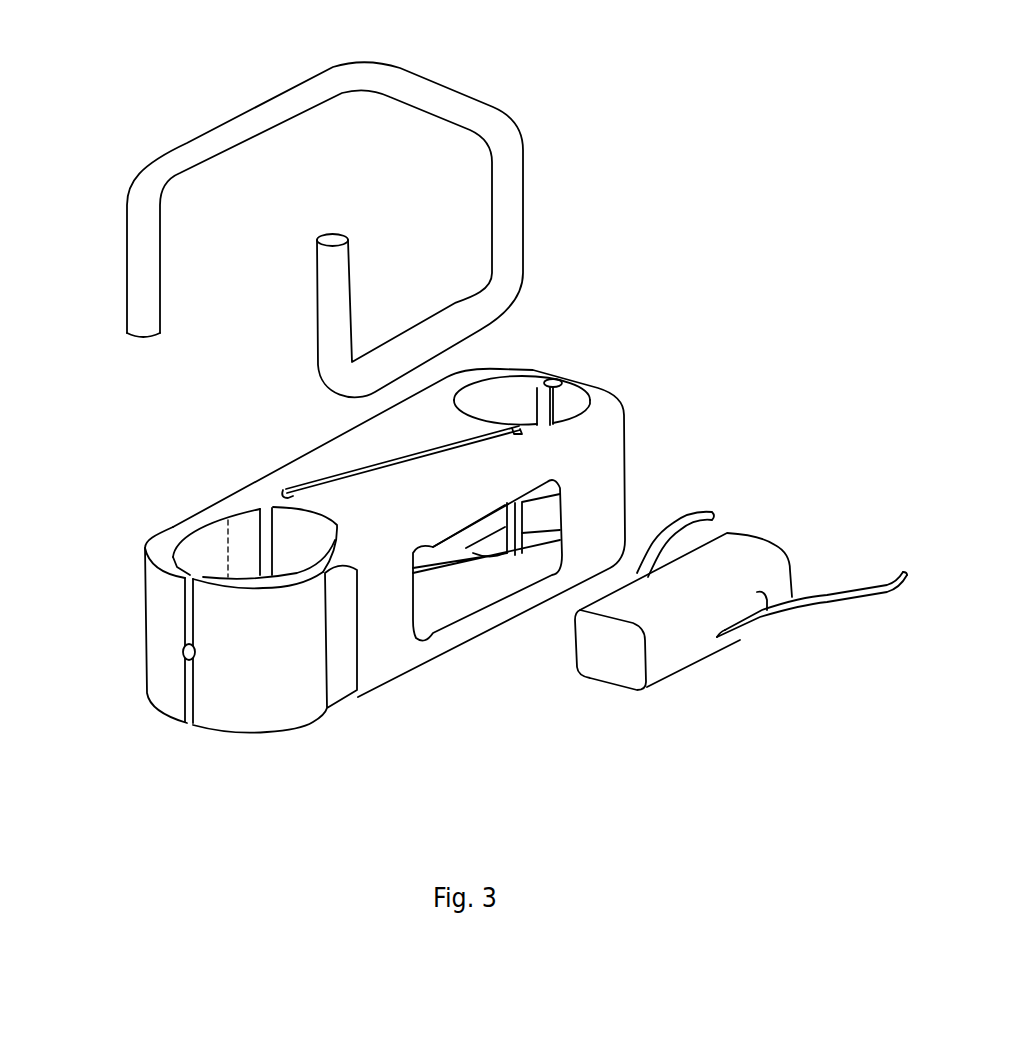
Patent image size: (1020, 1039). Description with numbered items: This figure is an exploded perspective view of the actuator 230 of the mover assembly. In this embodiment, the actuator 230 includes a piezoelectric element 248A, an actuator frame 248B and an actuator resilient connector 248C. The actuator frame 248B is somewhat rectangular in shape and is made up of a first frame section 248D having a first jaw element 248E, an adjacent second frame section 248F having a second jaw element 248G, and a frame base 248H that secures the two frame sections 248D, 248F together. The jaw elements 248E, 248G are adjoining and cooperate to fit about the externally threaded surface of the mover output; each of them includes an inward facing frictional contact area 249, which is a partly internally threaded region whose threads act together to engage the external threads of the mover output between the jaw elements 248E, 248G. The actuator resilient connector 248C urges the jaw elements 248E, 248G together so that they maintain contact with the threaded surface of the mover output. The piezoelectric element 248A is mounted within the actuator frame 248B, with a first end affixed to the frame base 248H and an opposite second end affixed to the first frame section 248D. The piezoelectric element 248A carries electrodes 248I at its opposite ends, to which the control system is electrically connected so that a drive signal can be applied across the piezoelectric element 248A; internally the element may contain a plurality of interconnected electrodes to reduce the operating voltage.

The actuator 230 is at (592, 226).
The piezoelectric element 248A is at (723, 557).
The actuator frame 248B is at (497, 367).
The actuator resilient connector 248C is at (254, 115).
The first frame section 248D is at (430, 655).
The first jaw element 248E is at (245, 710).
The second frame section 248F is at (278, 470).
The second jaw element 248G is at (172, 530).
The frame base 248H is at (583, 392).
The electrodes 248I is at (847, 590).
The frictional contact area 249 is at (220, 530).